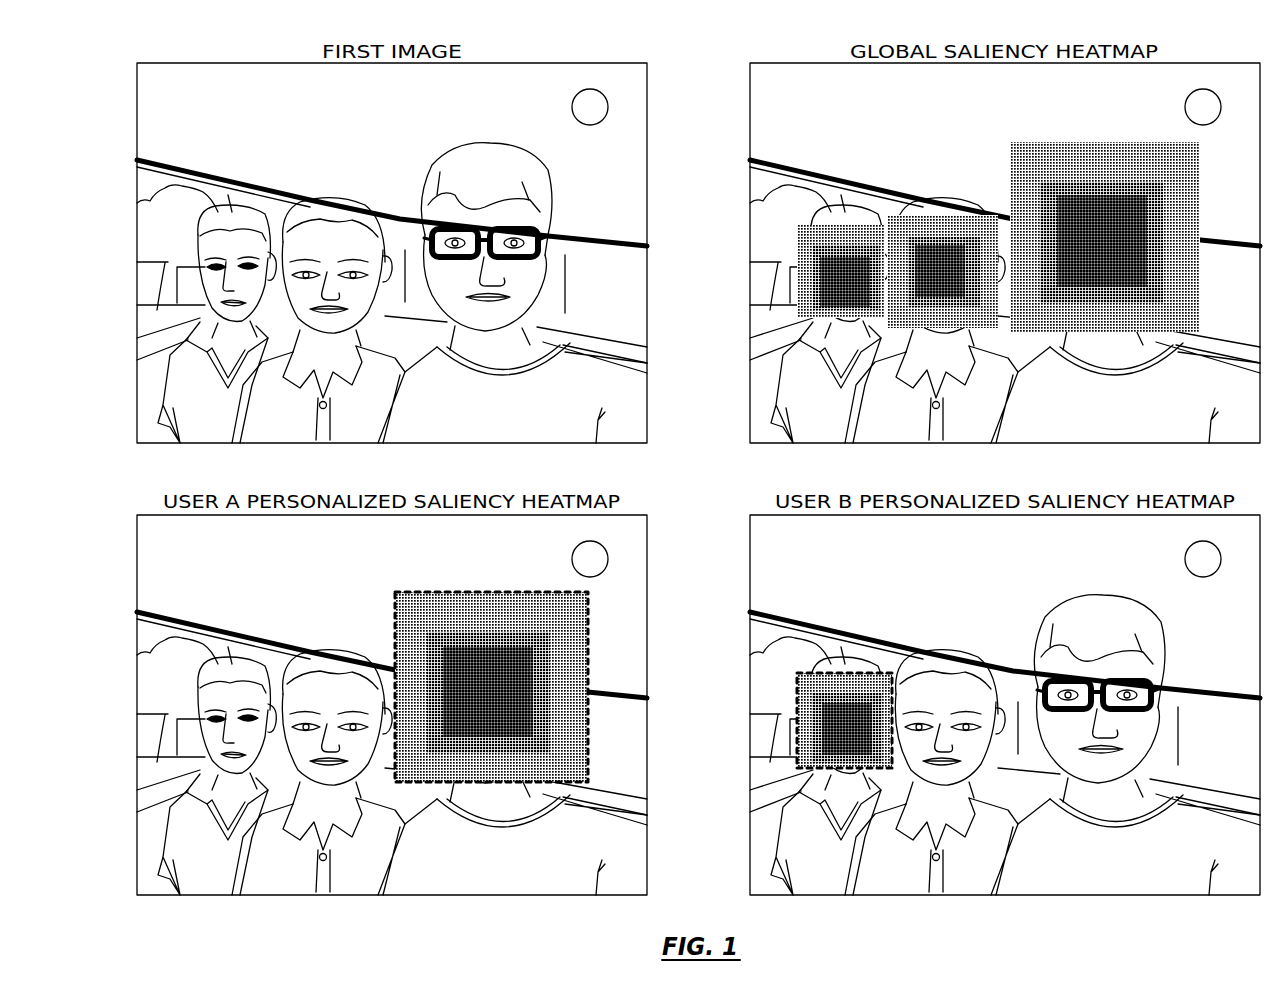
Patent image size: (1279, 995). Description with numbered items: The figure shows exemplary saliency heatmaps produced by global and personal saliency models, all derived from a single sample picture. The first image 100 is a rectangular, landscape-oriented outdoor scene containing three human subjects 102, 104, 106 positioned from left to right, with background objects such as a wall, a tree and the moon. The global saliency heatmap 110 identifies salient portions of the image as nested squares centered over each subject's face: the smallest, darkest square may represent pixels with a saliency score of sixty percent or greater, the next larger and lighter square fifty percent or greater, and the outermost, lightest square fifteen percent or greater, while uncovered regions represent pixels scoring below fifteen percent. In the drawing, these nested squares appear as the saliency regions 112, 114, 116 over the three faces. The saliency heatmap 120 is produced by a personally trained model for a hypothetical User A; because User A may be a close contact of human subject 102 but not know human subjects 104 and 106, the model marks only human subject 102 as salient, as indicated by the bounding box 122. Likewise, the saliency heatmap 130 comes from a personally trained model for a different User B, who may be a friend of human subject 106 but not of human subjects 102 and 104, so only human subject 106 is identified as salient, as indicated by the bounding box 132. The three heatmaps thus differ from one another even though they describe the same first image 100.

The first image 100 is at (362, 248).
The human subject 102 is at (446, 172).
The human subject 104 is at (330, 204).
The human subject 106 is at (236, 213).
The saliency heatmap 110 is at (975, 248).
The saliency region for third person 112 is at (818, 236).
The saliency region for second person 114 is at (918, 227).
The saliency region for first person 116 is at (1047, 145).
The saliency heatmap 120 is at (362, 700).
The bounding box 122 is at (423, 592).
The saliency heatmap 130 is at (975, 700).
The bounding box 132 is at (827, 673).